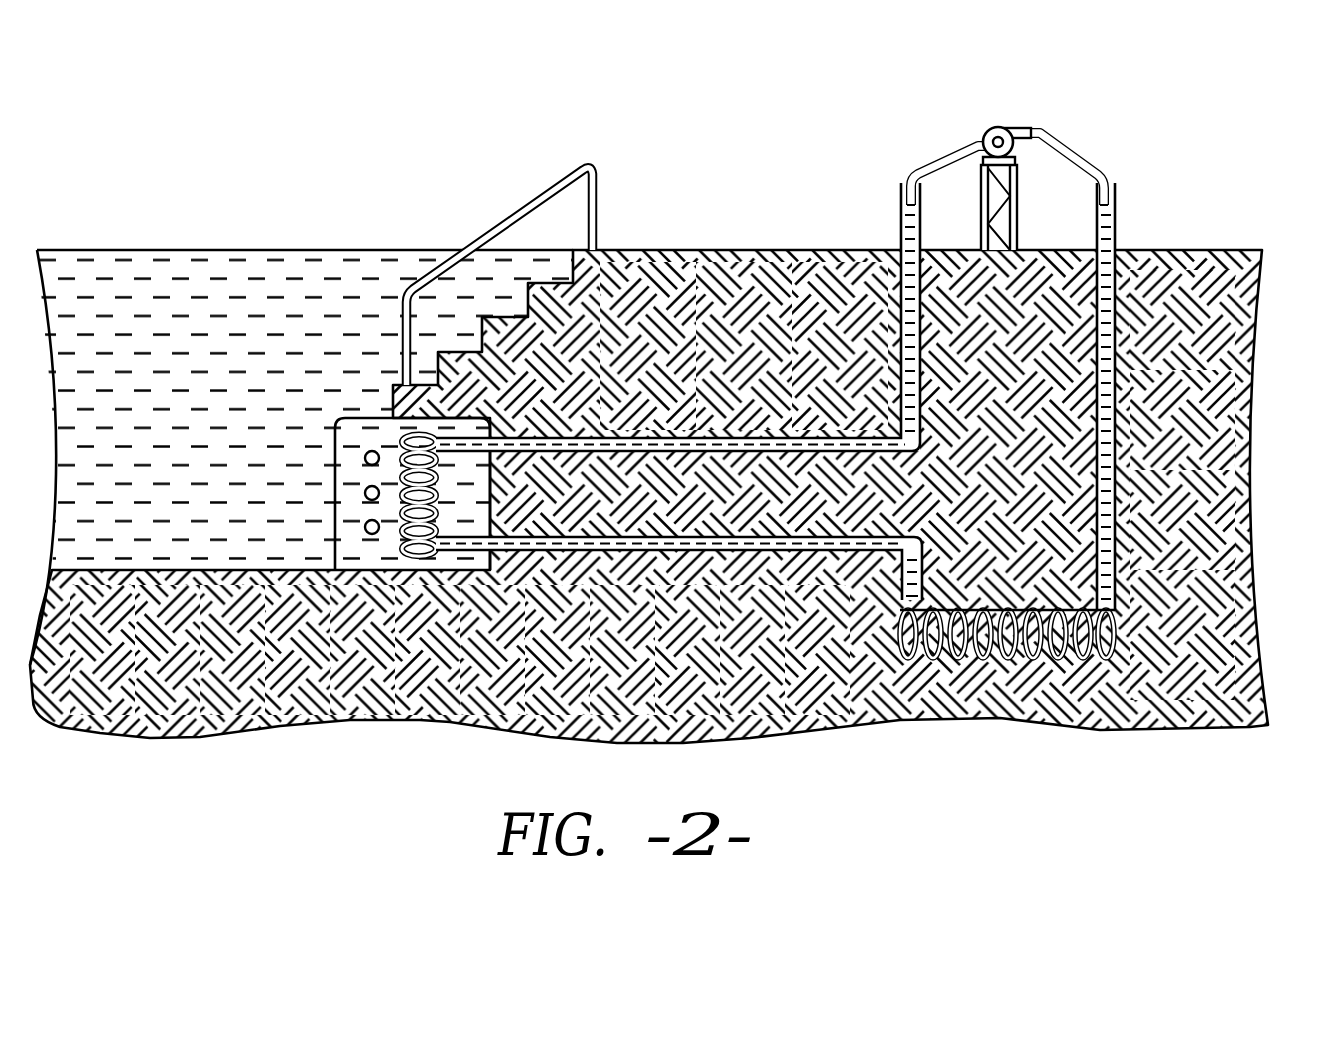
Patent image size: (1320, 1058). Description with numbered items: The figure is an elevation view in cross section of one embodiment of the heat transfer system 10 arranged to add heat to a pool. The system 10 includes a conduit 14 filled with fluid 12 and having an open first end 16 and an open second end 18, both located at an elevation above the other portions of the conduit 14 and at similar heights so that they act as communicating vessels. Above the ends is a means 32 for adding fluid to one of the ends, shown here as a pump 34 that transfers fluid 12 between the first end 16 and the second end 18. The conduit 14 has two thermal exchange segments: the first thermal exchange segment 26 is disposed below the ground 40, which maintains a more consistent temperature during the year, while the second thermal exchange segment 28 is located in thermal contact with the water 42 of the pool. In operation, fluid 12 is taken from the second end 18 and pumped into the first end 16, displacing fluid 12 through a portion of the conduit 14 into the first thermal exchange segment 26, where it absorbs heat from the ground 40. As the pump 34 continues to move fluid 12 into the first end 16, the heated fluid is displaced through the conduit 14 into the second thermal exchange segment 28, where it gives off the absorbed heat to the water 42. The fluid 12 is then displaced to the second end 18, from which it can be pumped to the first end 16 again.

The heat transfer system 10 is at (1152, 97).
The fluid 12 is at (1103, 367).
The conduit 14 is at (403, 452).
The first end 16 is at (1118, 203).
The second end 18 is at (900, 203).
The first thermal exchange segment 26 is at (970, 660).
The second thermal exchange segment 28 is at (397, 480).
The means for adding fluid 32 is at (987, 131).
The pump 34 is at (1020, 128).
The ground 40 is at (1183, 278).
The water 42 is at (143, 275).